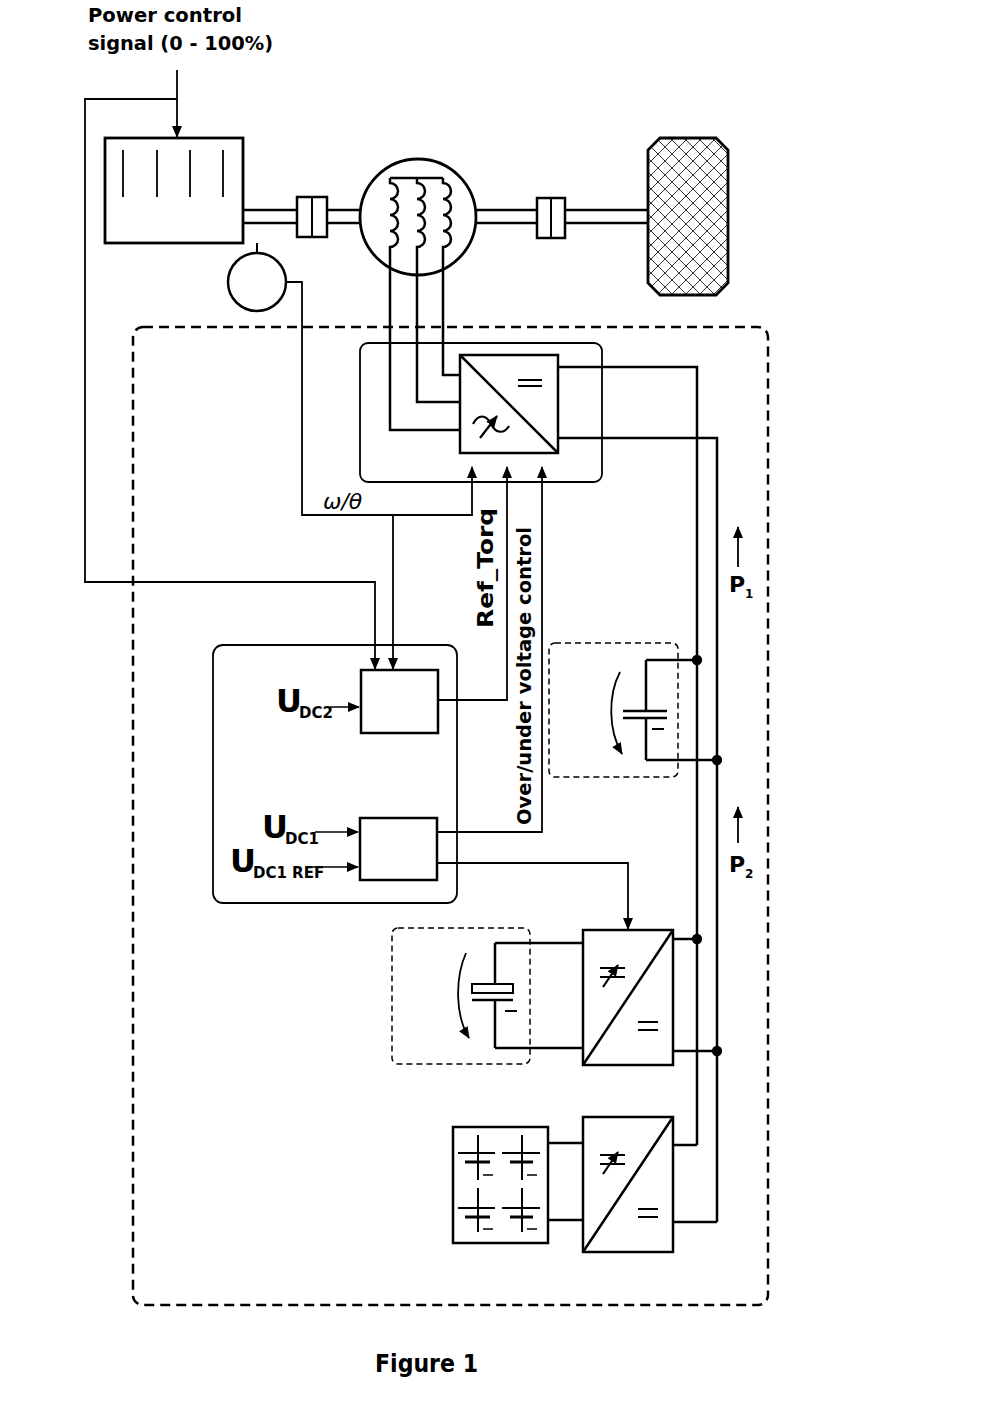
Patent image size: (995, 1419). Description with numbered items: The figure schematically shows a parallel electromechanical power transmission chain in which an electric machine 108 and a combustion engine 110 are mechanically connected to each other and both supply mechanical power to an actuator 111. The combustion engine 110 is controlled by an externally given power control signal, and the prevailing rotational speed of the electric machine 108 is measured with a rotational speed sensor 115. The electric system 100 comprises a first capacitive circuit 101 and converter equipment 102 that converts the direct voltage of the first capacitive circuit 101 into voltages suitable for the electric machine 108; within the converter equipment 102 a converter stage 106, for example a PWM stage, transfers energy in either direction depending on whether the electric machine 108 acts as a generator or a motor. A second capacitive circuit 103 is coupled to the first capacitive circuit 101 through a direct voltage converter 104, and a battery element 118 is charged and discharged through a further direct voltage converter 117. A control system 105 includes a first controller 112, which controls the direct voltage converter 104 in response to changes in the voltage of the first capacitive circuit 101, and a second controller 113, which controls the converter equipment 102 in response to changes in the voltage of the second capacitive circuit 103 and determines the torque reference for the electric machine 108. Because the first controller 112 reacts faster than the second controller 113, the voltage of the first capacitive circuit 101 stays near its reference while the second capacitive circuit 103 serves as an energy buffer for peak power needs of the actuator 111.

The electric system 100 is at (133, 865).
The first capacitive circuit 101 is at (641, 643).
The converter equipment 102 is at (577, 482).
The second capacitive circuit 103 is at (447, 1064).
The direct voltage converter 104 is at (637, 1065).
The control system 105 is at (213, 712).
The converter stage 106 is at (460, 440).
The electric machine 108 is at (416, 158).
The combustion engine 110 is at (190, 231).
The actuator 111 is at (690, 138).
The first controller 112 is at (416, 866).
The second controller 113 is at (417, 719).
The rotational speed sensor 115 is at (274, 293).
The direct voltage converter 117 is at (637, 1252).
The battery element 118 is at (503, 1243).